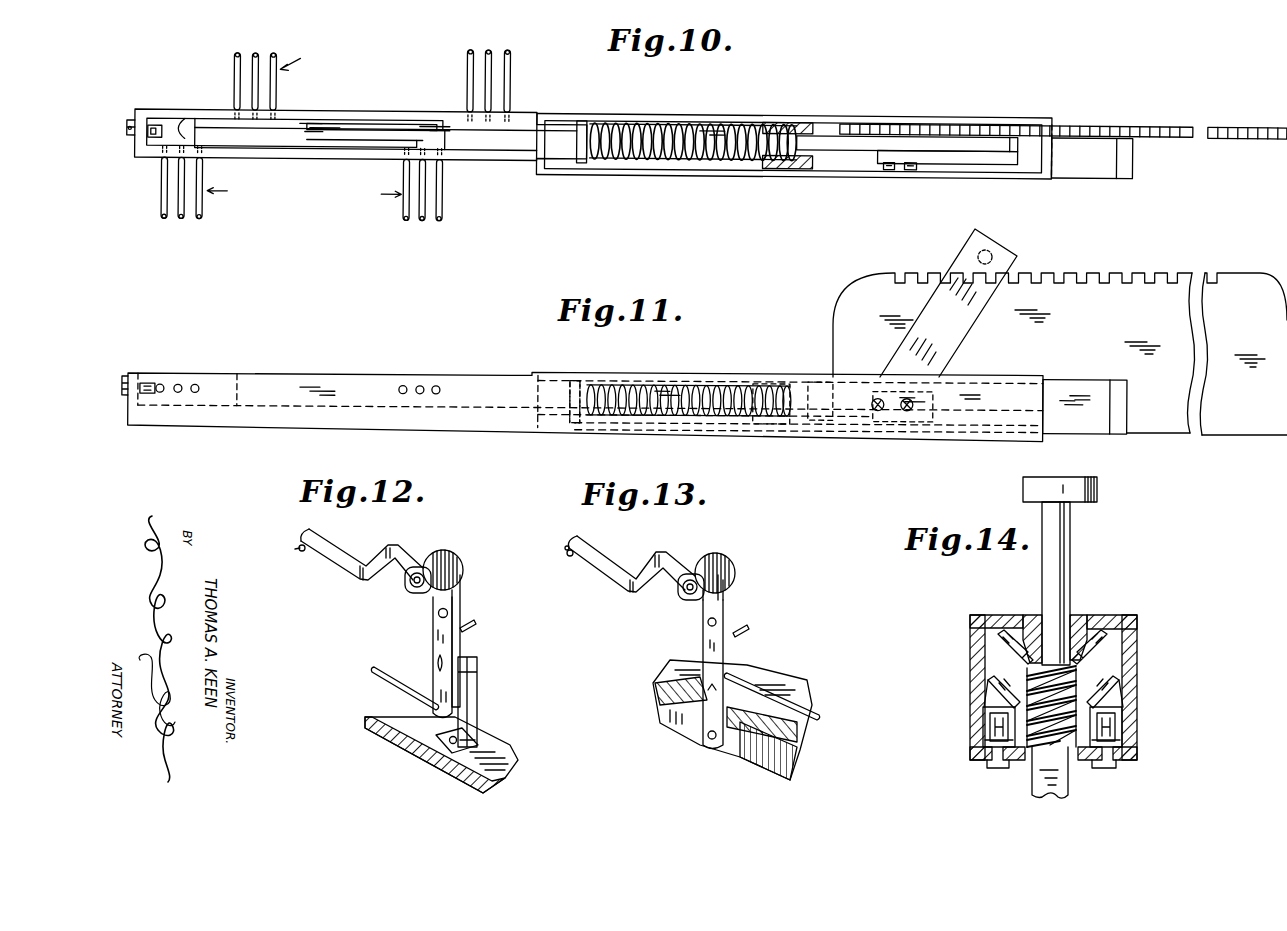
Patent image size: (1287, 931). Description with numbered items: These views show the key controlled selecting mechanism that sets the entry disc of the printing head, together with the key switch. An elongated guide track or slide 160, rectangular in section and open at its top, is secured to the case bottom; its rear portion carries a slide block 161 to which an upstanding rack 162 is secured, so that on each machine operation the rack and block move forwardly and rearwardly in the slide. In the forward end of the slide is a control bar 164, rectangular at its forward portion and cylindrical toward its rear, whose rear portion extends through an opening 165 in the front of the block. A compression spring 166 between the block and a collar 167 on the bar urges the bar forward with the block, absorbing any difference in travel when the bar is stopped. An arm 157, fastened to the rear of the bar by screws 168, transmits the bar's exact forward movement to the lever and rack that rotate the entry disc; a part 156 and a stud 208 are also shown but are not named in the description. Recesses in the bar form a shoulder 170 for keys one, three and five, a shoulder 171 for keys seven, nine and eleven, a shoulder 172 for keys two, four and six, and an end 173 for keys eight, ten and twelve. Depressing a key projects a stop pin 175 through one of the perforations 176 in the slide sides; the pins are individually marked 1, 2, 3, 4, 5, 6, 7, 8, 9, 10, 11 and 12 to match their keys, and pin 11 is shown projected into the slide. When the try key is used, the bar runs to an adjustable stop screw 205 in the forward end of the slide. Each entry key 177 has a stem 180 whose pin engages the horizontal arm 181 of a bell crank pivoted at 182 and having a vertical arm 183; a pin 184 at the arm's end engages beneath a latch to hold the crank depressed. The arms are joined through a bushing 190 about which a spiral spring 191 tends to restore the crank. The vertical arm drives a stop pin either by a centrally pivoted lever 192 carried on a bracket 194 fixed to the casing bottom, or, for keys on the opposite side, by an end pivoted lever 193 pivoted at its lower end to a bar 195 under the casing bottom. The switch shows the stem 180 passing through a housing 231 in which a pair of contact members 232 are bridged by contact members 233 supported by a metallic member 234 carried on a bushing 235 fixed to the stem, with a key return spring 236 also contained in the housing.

In FIG. 10, the stop pin 1 is at (507, 47).
In FIG. 10, the stop pin 2 is at (273, 52).
In FIG. 10, the stop pin 3 is at (488, 47).
In FIG. 10, the stop pin 4 is at (255, 52).
In FIG. 10, the stop pin 5 is at (470, 47).
In FIG. 10, the stop pin 6 is at (237, 52).
In FIG. 10, the stop pin 7 is at (440, 220).
In FIG. 10, the stop pin 8 is at (200, 220).
In FIG. 10, the stop pin 9 is at (423, 220).
In FIG. 10, the stop pin 10 is at (182, 220).
In FIG. 10, the stop pin 11 is at (407, 220).
In FIG. 10, the stop pin 12 is at (165, 220).
In FIG. 10, the rack bar 156 is at (985, 120).
In FIG. 11, the rack bar 156 is at (992, 250).
In FIG. 10, the arm 157 is at (952, 158).
In FIG. 11, the arm 157 is at (957, 330).
In FIG. 10, the guide track or slide 160 is at (675, 110).
In FIG. 11, the guide track or slide 160 is at (670, 371).
In FIG. 10, the slide block 161 is at (1090, 160).
In FIG. 11, the slide block 161 is at (1103, 418).
In FIG. 10, the rack 162 is at (1238, 116).
In FIG. 11, the rack 162 is at (1173, 333).
In FIG. 10, the control bar 164 is at (520, 150).
In FIG. 11, the control bar 164 is at (555, 378).
In FIG. 10, the opening 165 is at (798, 118).
In FIG. 10, the compression spring 166 is at (705, 158).
In FIG. 11, the compression spring 166 is at (725, 384).
In FIG. 10, the collar 167 is at (580, 160).
In FIG. 11, the collar 167 is at (573, 418).
In FIG. 10, the screws 168 is at (889, 164).
In FIG. 11, the screws 168 is at (878, 406).
In FIG. 10, the shoulder 170 is at (452, 128).
In FIG. 10, the shoulder 171 is at (420, 126).
In FIG. 10, the shoulder 172 is at (205, 120).
In FIG. 10, the end 173 is at (183, 125).
In FIG. 10, the stop pin 175 is at (304, 129).
In FIG. 12, the stop pin 175 is at (372, 672).
In FIG. 13, the stop pin 175 is at (770, 700).
In FIG. 11, the perforations 176 is at (437, 384).
In FIG. 14, the entry key 177 is at (1107, 496).
In FIG. 14, the key stem 180 is at (1062, 782).
In FIG. 12, the horizontal arm 181 is at (337, 564).
In FIG. 13, the horizontal arm 181 is at (606, 568).
In FIG. 12, the pivot 182 is at (415, 588).
In FIG. 13, the pivot 182 is at (688, 595).
In FIG. 12, the vertical arm 183 is at (458, 597).
In FIG. 13, the vertical arm 183 is at (726, 592).
In FIG. 12, the pin 184 is at (298, 546).
In FIG. 13, the pin 184 is at (566, 550).
In FIG. 12, the bushing 190 is at (406, 580).
In FIG. 13, the bushing 190 is at (680, 587).
In FIG. 12, the spiral spring 191 is at (436, 550).
In FIG. 13, the spiral spring 191 is at (708, 553).
In FIG. 12, the centrally pivoted lever 192 is at (433, 645).
In FIG. 13, the end pivoted lever 193 is at (700, 662).
In FIG. 12, the bracket 194 is at (478, 697).
In FIG. 12, the bar 195 is at (429, 755).
In FIG. 13, the bar 195 is at (745, 737).
In FIG. 10, the screw 205 is at (127, 118).
In FIG. 11, the screw 205 is at (124, 375).
In FIG. 12, the stud 208 is at (476, 622).
In FIG. 13, the stud 208 is at (750, 628).
In FIG. 14, the housing 231 is at (1137, 655).
In FIG. 14, the contact members 232 is at (1121, 692).
In FIG. 14, the contact members 233 is at (1105, 645).
In FIG. 14, the metallic member 234 is at (1100, 615).
In FIG. 14, the bushing 235 is at (1030, 615).
In FIG. 14, the key return spring 236 is at (1030, 742).